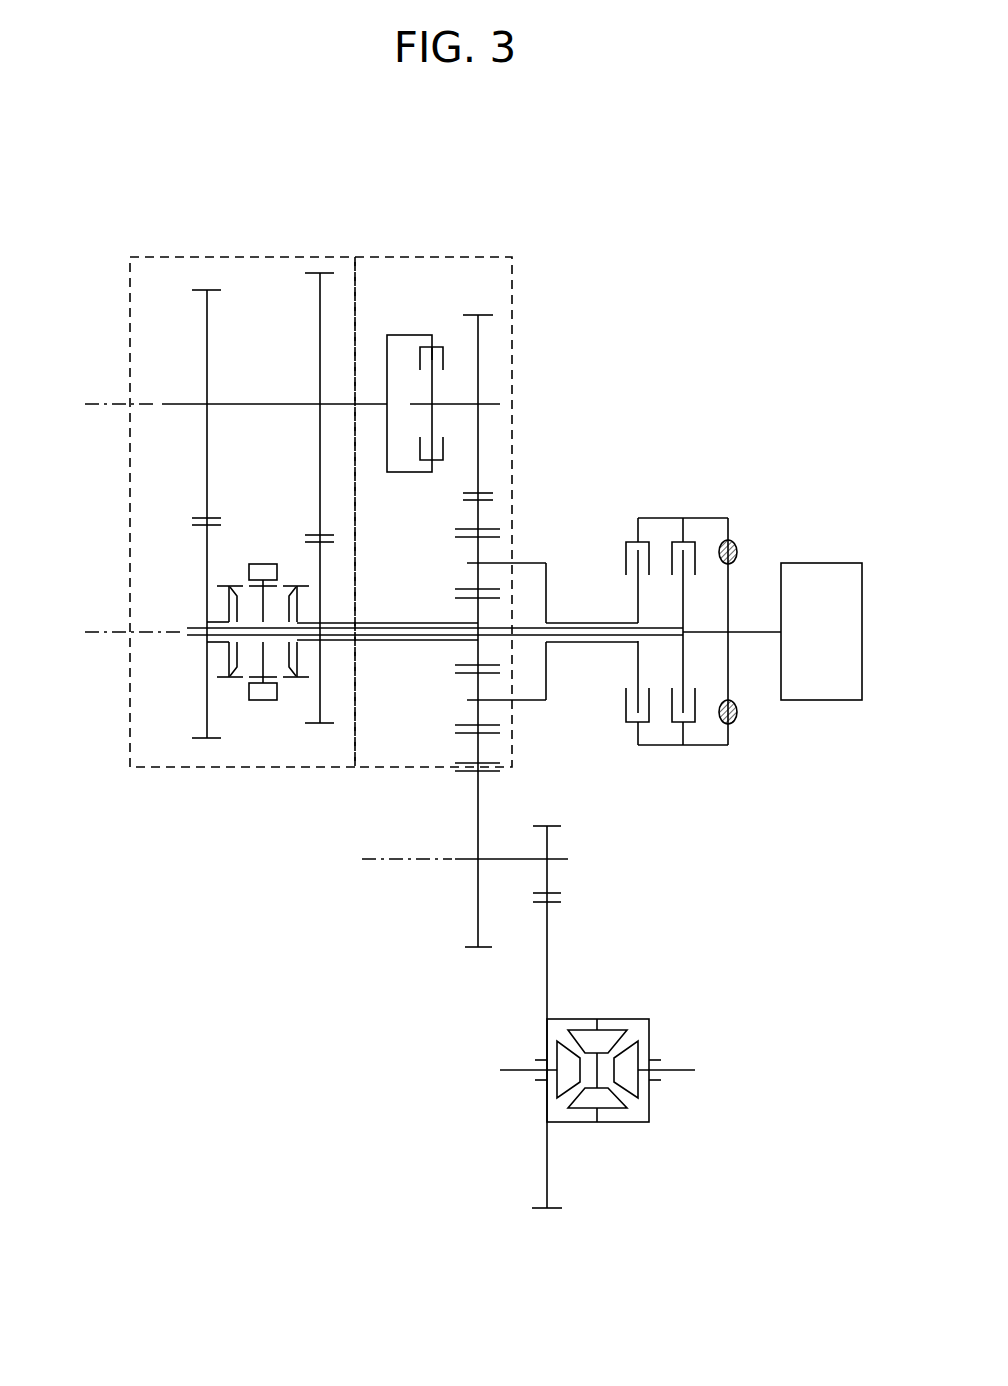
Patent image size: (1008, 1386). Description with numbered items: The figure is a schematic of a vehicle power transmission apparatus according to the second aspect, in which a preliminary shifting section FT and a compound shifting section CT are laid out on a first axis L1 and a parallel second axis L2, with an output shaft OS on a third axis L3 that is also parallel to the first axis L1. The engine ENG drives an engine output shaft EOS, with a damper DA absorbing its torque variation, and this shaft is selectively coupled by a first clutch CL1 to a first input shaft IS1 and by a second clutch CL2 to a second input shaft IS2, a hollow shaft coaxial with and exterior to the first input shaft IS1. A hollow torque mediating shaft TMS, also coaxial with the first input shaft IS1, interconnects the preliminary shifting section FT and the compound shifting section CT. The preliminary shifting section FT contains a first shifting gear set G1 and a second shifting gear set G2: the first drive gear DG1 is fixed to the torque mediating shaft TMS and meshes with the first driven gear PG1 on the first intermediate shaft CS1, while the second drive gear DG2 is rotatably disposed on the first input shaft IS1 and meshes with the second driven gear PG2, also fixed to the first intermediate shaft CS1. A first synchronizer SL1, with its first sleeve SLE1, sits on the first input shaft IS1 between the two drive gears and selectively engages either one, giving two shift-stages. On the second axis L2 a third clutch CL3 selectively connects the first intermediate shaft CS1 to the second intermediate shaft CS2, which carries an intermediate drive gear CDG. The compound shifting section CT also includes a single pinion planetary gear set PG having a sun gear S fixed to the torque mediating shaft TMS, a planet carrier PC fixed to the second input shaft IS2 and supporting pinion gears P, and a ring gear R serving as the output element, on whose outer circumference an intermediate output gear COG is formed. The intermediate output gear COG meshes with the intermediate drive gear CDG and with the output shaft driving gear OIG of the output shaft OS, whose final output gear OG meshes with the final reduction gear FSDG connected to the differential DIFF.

The preliminary shifting section FT is at (231, 250).
The compound shifting section CT is at (506, 248).
The third clutch CL3 is at (436, 332).
The first driven gear PG1 is at (319, 302).
The second driven gear PG2 is at (206, 346).
The first drive gear DG1 is at (318, 558).
The second drive gear DG2 is at (210, 540).
The first intermediate shaft CS1 is at (274, 403).
The second intermediate shaft CS2 is at (489, 402).
The intermediate drive gear CDG is at (481, 330).
The intermediate output gear COG is at (470, 503).
The planetary gear set PG is at (500, 510).
The ring gear R is at (463, 528).
The pinion gears P is at (477, 552).
The sun gear S is at (469, 598).
The planet carrier PC is at (530, 563).
The first input shaft IS1 is at (432, 636).
The second input shaft IS2 is at (603, 622).
The torque mediating shaft TMS is at (385, 641).
The first sleeve SLE1 is at (264, 700).
The first synchronizer SL1 is at (288, 718).
The first shifting gear set G1 is at (322, 746).
The second shifting gear set G2 is at (203, 752).
The first clutch CL1 is at (694, 530).
The second clutch CL2 is at (647, 530).
The damper DA is at (748, 534).
The engine ENG is at (821, 631).
The engine output shaft EOS is at (755, 634).
The output shaft driving gear OIG is at (477, 821).
The output shaft OS is at (503, 858).
The final output gear OG is at (550, 838).
The final reduction gear FSDG is at (548, 951).
The differential DIFF is at (650, 1033).
The first axis L1 is at (120, 635).
The second axis L2 is at (279, 407).
The third axis L3 is at (450, 862).